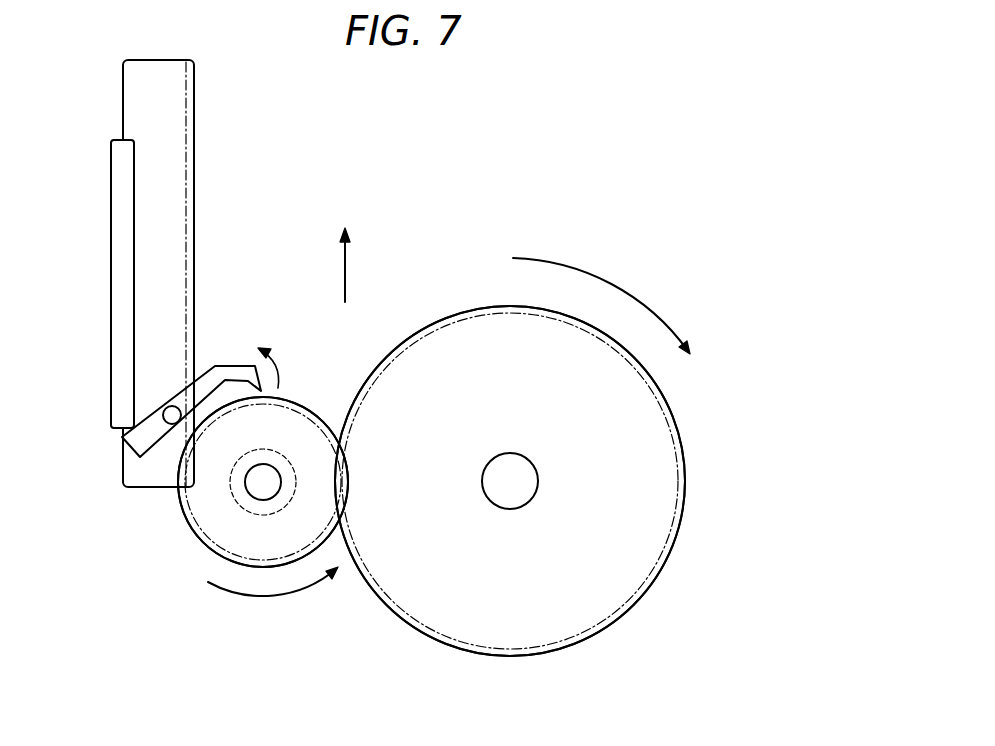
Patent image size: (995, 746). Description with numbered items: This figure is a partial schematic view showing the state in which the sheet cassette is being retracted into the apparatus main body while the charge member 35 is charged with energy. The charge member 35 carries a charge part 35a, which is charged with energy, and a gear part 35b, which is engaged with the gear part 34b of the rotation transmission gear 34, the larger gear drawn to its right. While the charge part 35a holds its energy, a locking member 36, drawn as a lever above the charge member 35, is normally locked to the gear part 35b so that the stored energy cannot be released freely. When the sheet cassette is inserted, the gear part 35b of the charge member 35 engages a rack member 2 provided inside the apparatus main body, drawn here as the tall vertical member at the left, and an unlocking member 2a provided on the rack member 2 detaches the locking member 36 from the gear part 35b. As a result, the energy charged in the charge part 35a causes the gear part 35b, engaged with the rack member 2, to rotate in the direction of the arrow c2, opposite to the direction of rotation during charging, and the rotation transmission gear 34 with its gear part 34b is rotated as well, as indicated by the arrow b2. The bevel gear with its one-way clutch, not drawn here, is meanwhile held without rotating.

The rack member 2 is at (143, 88).
The unlocking member 2a is at (122, 202).
The locking member 36 is at (223, 375).
The charge member 35 is at (219, 511).
The charge part 35a is at (232, 487).
The gear part 35b is at (212, 550).
The rotation transmission gear 34 is at (558, 524).
The gear part 34b is at (510, 656).
The arrow b2 is at (601, 304).
The arrow c2 is at (273, 600).